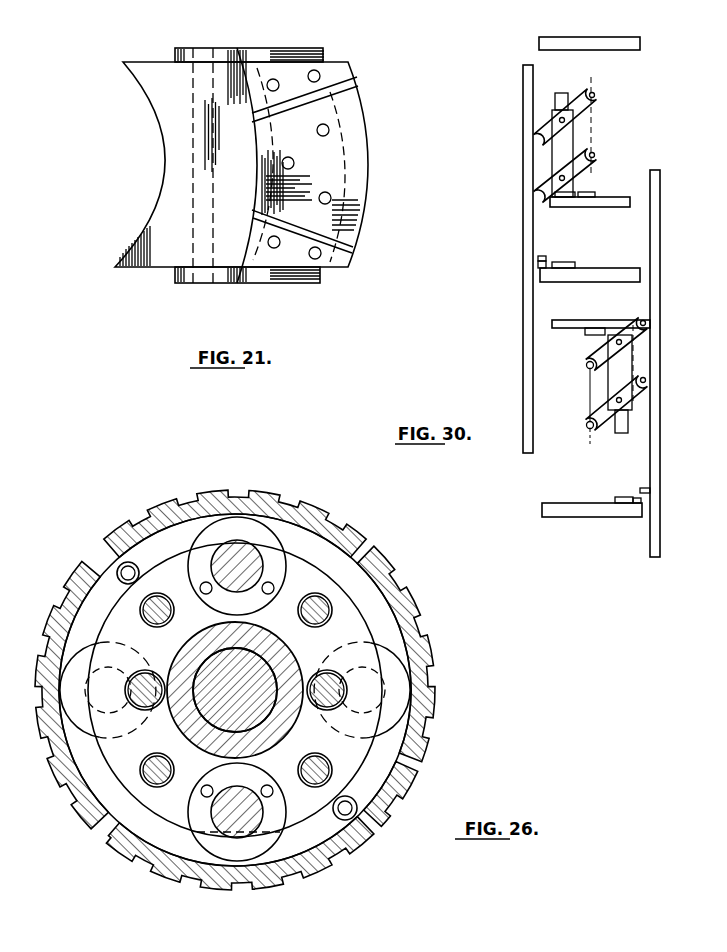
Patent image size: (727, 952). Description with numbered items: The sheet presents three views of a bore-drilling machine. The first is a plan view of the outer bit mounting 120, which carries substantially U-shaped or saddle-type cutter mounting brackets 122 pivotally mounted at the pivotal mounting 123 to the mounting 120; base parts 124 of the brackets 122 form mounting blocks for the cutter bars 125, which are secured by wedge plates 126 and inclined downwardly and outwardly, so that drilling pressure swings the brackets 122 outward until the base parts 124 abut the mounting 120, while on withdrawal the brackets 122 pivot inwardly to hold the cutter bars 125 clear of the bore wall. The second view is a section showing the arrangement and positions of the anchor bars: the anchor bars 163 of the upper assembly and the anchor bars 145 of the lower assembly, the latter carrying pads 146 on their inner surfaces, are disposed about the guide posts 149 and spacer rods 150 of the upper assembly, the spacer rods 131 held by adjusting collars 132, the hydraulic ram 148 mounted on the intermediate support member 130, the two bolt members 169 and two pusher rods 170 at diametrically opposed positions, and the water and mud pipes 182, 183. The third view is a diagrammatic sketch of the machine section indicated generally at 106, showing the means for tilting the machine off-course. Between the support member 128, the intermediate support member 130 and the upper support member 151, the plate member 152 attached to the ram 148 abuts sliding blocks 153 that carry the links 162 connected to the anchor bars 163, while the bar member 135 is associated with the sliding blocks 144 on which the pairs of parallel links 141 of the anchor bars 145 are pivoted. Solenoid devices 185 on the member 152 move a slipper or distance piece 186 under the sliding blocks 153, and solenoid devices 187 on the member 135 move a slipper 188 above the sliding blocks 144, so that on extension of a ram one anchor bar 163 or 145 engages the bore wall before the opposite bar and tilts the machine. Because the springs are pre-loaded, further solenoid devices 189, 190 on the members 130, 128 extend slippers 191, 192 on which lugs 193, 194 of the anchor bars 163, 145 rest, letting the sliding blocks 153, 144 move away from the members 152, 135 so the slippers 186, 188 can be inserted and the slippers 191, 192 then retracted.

In FIG. 21, the outer bit mounting 120 is at (165, 127).
In FIG. 21, the cutter mounting brackets 122 is at (202, 55).
In FIG. 21, the pivotal mounting 123 is at (193, 100).
In FIG. 21, the base parts 124 is at (327, 110).
In FIG. 21, the cutter bars 125 is at (357, 230).
In FIG. 21, the wedge plates 126 is at (333, 148).
In FIG. 30, the upper support member 151 is at (630, 37).
In FIG. 30, the anchor bars 163 is at (523, 153).
In FIG. 26, the anchor bars 163 is at (392, 718).
In FIG. 30, the anchor bars 145 is at (660, 255).
In FIG. 26, the anchor bars 145 is at (351, 538).
In FIG. 30, the sliding blocks 153 is at (567, 140).
In FIG. 30, the links 162 is at (587, 108).
In FIG. 30, the solenoid devices 185 is at (594, 192).
In FIG. 30, the slipper 186 is at (575, 200).
In FIG. 30, the plate member 152 is at (618, 204).
In FIG. 30, the solenoid devices 189 is at (568, 262).
In FIG. 30, the lugs 193 is at (538, 258).
In FIG. 30, the slippers 191 is at (540, 270).
In FIG. 30, the intermediate support member 130 is at (595, 283).
In FIG. 26, the intermediate support member 130 is at (352, 620).
In FIG. 30, the bar member 135 is at (617, 320).
In FIG. 30, the solenoid devices 187 is at (585, 332).
In FIG. 30, the slipper 188 is at (612, 344).
In FIG. 30, the sliding blocks 144 is at (627, 360).
In FIG. 30, the parallel links 141 is at (647, 328).
In FIG. 30, the assembly 106 is at (518, 327).
In FIG. 30, the lugs 194 is at (647, 488).
In FIG. 30, the support member 128 is at (553, 503).
In FIG. 30, the solenoid devices 190 is at (617, 497).
In FIG. 30, the slippers 192 is at (641, 503).
In FIG. 26, the adjusting collars 132 is at (97, 643).
In FIG. 26, the spacer rods 131 is at (425, 679).
In FIG. 26, the guide posts 149 is at (130, 697).
In FIG. 26, the bolt members 169 is at (330, 603).
In FIG. 26, the pusher rods 170 is at (142, 600).
In FIG. 26, the hydraulic ram 148 is at (262, 713).
In FIG. 26, the pads 146 is at (266, 524).
In FIG. 26, the spacer rods 150 is at (237, 540).
In FIG. 26, the water pipe 182 is at (118, 566).
In FIG. 26, the mud pipe 183 is at (343, 821).